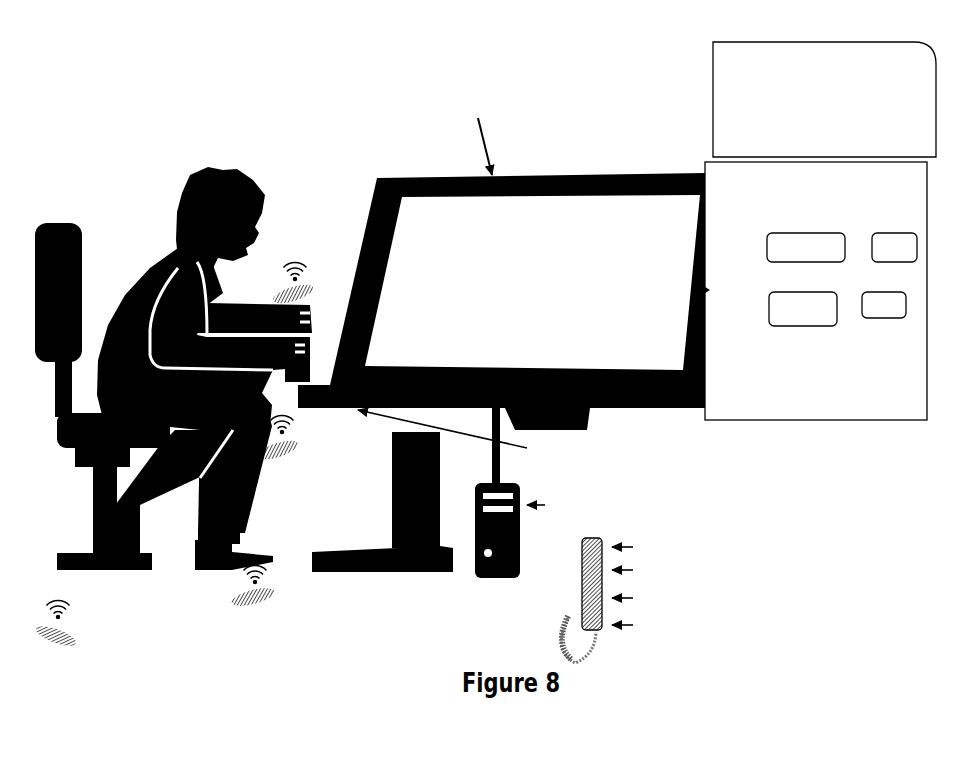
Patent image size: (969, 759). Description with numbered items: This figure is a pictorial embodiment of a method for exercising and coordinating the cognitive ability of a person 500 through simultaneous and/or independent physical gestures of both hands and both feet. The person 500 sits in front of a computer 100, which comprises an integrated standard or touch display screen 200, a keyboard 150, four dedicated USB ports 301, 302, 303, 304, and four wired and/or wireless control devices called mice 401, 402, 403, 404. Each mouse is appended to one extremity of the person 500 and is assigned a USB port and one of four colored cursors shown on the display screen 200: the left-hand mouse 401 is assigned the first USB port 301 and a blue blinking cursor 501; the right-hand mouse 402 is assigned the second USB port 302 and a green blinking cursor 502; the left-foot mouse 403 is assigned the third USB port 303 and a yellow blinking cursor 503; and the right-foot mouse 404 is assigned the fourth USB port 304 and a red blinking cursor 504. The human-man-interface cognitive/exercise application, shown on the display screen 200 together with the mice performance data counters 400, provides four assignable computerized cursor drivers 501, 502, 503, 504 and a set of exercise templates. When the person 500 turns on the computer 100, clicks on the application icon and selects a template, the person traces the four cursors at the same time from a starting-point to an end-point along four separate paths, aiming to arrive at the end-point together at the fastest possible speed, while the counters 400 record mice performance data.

The person 500 is at (128, 187).
The display screen 200 is at (547, 105).
The cursor #1 501 is at (456, 240).
The cursor #2 502 is at (613, 237).
The cursor #3 503 is at (436, 331).
The cursor #4 504 is at (630, 327).
The mice performance data counters 400 is at (822, 231).
The keyboard 150 is at (633, 453).
The computer 100 is at (687, 504).
The USB port 1 301 is at (710, 552).
The USB port 2 302 is at (697, 576).
The USB port 3 303 is at (703, 603).
The USB port 4 304 is at (707, 640).
The left-hand mouse #1 401 is at (298, 254).
The right-hand mouse #2 402 is at (290, 487).
The left-foot mouse #3 403 is at (170, 655).
The right-foot mouse #4 404 is at (230, 603).